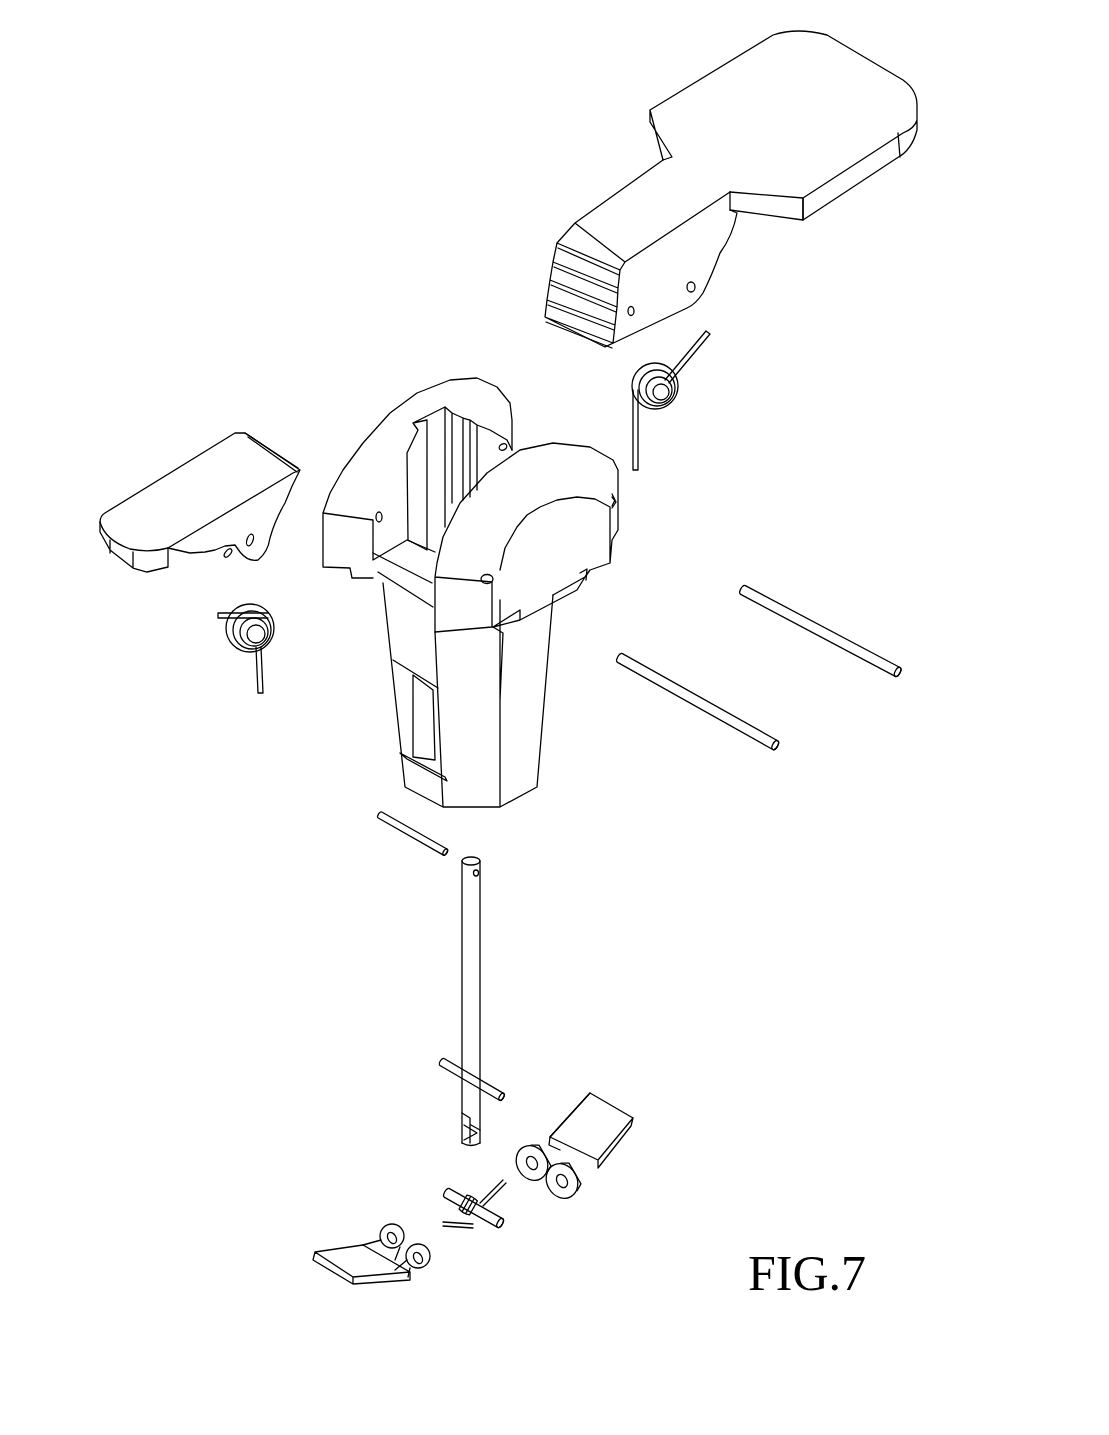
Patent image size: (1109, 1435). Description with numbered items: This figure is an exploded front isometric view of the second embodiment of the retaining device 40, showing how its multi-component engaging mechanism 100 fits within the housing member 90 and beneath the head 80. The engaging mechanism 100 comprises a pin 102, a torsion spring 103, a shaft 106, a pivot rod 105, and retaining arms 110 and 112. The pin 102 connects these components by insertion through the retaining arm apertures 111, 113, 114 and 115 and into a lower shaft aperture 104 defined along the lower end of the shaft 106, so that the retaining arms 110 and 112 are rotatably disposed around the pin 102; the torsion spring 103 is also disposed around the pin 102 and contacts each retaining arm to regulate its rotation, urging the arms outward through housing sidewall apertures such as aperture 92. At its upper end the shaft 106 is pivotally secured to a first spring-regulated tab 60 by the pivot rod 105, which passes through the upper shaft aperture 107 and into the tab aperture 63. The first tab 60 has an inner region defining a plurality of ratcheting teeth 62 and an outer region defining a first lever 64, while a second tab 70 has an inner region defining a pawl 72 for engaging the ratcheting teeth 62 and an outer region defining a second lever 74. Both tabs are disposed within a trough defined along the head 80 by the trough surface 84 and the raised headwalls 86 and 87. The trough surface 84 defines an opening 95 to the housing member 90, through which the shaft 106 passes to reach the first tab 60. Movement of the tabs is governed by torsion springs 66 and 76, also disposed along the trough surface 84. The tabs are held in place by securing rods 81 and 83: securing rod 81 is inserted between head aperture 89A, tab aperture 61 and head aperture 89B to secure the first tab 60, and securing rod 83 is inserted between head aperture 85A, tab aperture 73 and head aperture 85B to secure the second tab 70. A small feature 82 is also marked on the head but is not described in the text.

The retaining device 40 is at (300, 132).
The first spring-regulated tab 60 is at (697, 77).
The tab aperture 61 is at (695, 287).
The ratcheting teeth 62 is at (528, 240).
The tab aperture 63 is at (634, 311).
The first lever 64 is at (838, 70).
The torsion spring 66 is at (680, 395).
The second tab 70 is at (193, 455).
The pawl 72 is at (250, 440).
The tab aperture 73 is at (239, 564).
The second lever 74 is at (120, 522).
The torsion spring 76 is at (243, 640).
The head 80 is at (685, 548).
The securing rod 81 is at (843, 633).
The housing notch 82 is at (585, 602).
The securing rod 83 is at (705, 730).
The trough surface 84 is at (412, 567).
The head aperture 85A is at (493, 582).
The head aperture 85B is at (381, 513).
The raised headwall 86 is at (455, 385).
The raised headwall 87 is at (568, 465).
The head aperture 89A is at (616, 503).
The head aperture 89B is at (506, 447).
The housing member 90 is at (547, 747).
The housing sidewall aperture 92 is at (427, 743).
The opening 95 is at (458, 495).
The engaging mechanism 100 is at (683, 1090).
The pin 102 is at (480, 1235).
The torsion spring 103 is at (505, 1210).
The lower shaft aperture 104 is at (478, 1140).
The pivot rod 105 is at (403, 840).
The shaft 106 is at (460, 928).
The upper shaft aperture 107 is at (479, 873).
The retaining arm 110 is at (600, 1098).
The retaining arm aperture 111 is at (565, 1180).
The retaining arm 112 is at (340, 1252).
The retaining arm aperture 113 is at (528, 1152).
The retaining arm aperture 114 is at (422, 1267).
The retaining arm aperture 115 is at (393, 1224).